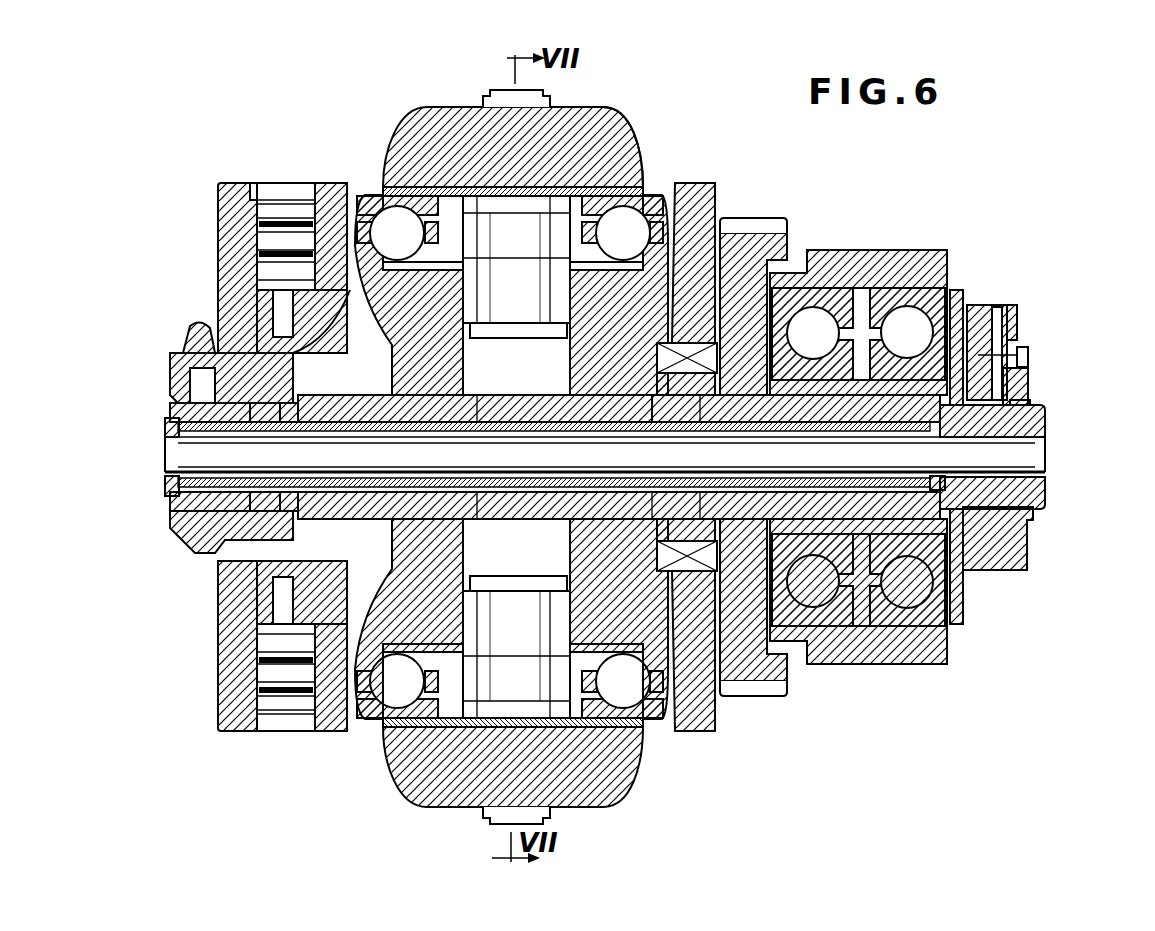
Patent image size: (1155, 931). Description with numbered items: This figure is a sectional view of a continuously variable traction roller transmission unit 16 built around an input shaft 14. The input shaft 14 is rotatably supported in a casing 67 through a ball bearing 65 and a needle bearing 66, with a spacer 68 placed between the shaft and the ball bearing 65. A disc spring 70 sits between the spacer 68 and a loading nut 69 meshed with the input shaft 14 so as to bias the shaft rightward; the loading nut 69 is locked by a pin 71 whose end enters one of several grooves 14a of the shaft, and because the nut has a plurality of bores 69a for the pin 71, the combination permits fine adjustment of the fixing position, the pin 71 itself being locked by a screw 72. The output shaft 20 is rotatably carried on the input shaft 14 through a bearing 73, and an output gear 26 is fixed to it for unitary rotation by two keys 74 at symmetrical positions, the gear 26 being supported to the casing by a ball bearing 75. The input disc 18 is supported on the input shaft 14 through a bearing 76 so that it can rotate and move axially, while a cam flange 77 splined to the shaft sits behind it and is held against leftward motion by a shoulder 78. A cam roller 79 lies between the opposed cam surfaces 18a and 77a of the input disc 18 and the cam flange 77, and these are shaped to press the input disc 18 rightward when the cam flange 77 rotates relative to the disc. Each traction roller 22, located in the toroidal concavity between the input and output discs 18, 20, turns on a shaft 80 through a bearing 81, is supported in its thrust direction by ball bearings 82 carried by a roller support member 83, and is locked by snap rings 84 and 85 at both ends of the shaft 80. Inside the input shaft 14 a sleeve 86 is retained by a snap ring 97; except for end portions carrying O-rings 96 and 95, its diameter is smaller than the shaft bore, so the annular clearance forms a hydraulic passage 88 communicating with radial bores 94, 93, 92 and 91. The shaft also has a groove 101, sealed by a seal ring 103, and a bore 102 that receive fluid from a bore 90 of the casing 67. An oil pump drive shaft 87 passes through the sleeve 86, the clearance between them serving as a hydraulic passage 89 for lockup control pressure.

The input shaft 14 is at (1048, 424).
The grooves 14a is at (1032, 412).
The continuously variable traction roller transmission unit 16 is at (386, 106).
The input disc 18 is at (335, 184).
The cam surface 18a is at (306, 184).
The output shaft 20 is at (700, 184).
The traction roller 22 is at (430, 600).
The output gear 26 is at (757, 218).
The ball bearing 65 is at (906, 322).
The needle bearing 66 is at (248, 345).
The casing 67 is at (845, 272).
The spacer 68 is at (958, 302).
The loading nut 69 is at (1030, 522).
The bores 69a is at (1018, 318).
The disc spring 70 is at (978, 307).
The pin 71 is at (1028, 388).
The screw 72 is at (1030, 354).
The bearing 73 is at (584, 370).
The keys 74 is at (690, 374).
The ball bearing 75 is at (812, 320).
The bearing 76 is at (445, 365).
The cam flange 77 is at (236, 186).
The cam surface 77a is at (262, 186).
The shoulder 78 is at (300, 392).
The cam roller 79 is at (286, 214).
The shaft 80 is at (575, 145).
The bearing 81 is at (558, 293).
The ball bearings 82 is at (624, 228).
The roller support member 83 is at (608, 162).
The snap ring 84 is at (598, 388).
The snap ring 85 is at (553, 102).
The sleeve 86 is at (166, 437).
The oil pump drive shaft 87 is at (166, 470).
The hydraulic passage 88 is at (532, 424).
The hydraulic passage 89 is at (502, 488).
The bore 90 is at (190, 346).
The bore 91 is at (842, 423).
The bore 92 is at (648, 422).
The bore 93 is at (480, 400).
The bore 94 is at (264, 414).
The O-ring 95 is at (936, 478).
The O-ring 96 is at (170, 488).
The snap ring 97 is at (170, 422).
The groove 101 is at (196, 360).
The bore 102 is at (190, 386).
The seal ring 103 is at (182, 408).